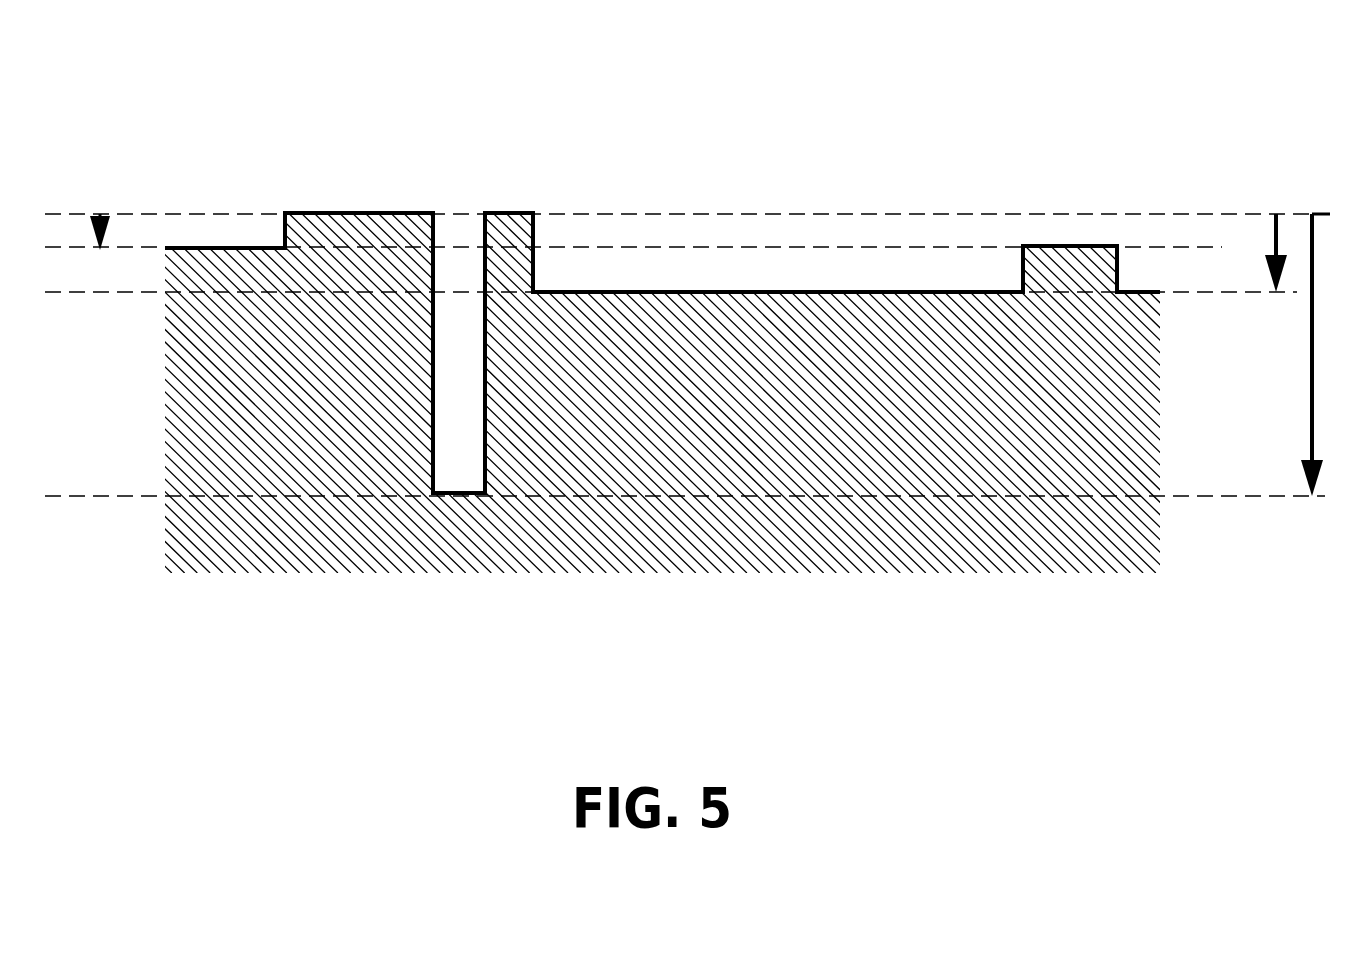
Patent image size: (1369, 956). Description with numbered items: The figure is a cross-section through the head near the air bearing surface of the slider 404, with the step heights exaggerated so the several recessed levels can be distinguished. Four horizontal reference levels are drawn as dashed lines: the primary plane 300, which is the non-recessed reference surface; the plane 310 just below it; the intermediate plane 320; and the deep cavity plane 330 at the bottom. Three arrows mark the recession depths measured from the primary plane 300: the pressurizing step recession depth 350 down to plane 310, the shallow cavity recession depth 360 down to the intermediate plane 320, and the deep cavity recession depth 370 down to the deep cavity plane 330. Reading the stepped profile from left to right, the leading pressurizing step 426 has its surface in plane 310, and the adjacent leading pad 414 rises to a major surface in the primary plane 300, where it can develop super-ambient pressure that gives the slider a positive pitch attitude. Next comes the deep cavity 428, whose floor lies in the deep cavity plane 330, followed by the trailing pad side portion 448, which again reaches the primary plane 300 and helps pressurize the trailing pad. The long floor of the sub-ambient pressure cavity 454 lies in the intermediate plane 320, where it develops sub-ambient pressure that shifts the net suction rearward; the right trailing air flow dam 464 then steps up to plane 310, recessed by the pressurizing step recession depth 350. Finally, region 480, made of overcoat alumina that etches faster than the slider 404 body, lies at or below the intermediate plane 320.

The primary plane 300 is at (1260, 214).
The plane 310 is at (1183, 247).
The intermediate plane 320 is at (56, 292).
The deep cavity plane 330 is at (57, 496).
The pressurizing step recession depth 350 is at (108, 242).
The shallow cavity recession depth 360 is at (1268, 263).
The deep cavity recession depth 370 is at (1310, 350).
The slider 404 is at (915, 523).
The leading pad 414 is at (359, 214).
The leading pressurizing step 426 is at (225, 235).
The deep cavity 428 is at (460, 495).
The trailing pad side portion 448 is at (508, 234).
The sub-ambient pressure cavity 454 is at (777, 274).
The right trailing air flow dam 464 is at (1070, 254).
The region 480 is at (1143, 292).